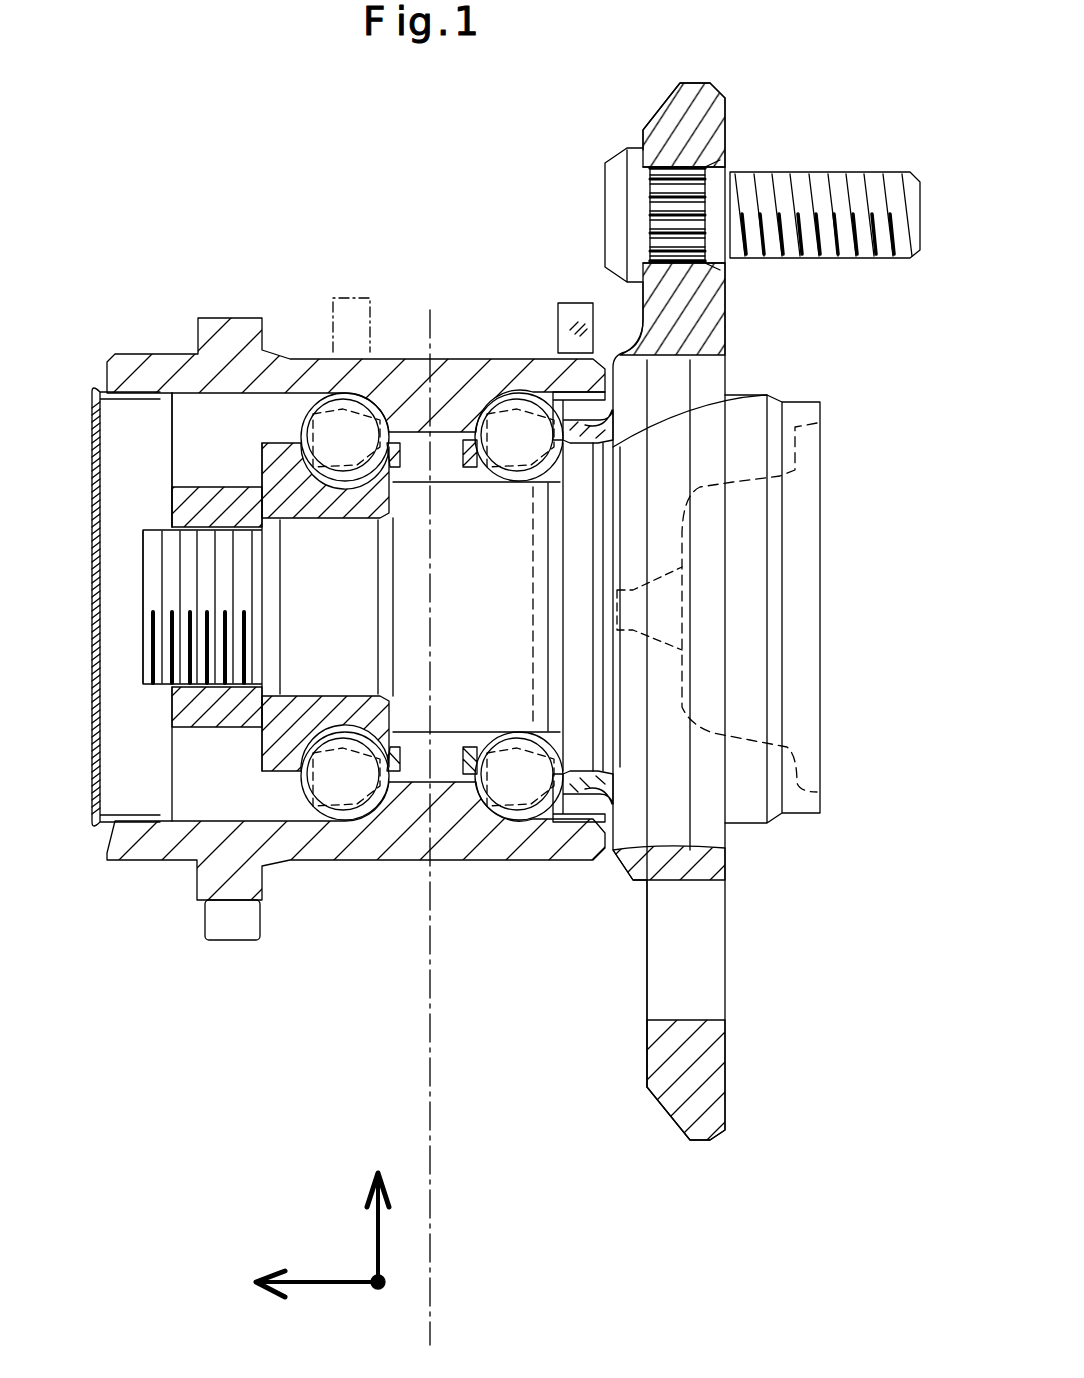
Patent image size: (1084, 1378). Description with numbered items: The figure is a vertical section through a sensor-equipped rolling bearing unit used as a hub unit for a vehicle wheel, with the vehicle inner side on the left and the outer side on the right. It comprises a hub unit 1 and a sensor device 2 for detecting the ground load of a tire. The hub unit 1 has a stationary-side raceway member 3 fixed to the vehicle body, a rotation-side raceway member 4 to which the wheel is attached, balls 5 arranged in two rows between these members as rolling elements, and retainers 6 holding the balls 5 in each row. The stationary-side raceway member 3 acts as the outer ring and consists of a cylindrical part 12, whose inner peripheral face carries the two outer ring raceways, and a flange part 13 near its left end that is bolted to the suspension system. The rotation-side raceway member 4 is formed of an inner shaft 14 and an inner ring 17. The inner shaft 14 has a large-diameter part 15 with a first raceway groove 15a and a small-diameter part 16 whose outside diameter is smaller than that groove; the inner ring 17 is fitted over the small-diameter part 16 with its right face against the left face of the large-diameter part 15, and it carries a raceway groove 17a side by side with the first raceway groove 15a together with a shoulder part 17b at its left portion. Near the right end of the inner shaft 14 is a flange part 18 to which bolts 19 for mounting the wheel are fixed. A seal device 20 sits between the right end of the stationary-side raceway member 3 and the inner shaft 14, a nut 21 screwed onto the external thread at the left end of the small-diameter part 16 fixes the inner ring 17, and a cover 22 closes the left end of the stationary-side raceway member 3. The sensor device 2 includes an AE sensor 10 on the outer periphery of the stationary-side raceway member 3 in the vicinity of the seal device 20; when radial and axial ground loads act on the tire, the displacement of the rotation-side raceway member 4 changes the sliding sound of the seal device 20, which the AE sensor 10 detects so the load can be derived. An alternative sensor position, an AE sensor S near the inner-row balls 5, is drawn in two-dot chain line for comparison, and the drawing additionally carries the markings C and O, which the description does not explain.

The hub unit 1 is at (505, 719).
The sensor device 2 is at (714, 611).
The stationary-side raceway member 3 is at (360, 602).
The rotation-side raceway member 4 is at (448, 478).
The balls 5 is at (338, 405).
The retainers 6 is at (408, 460).
The AE sensor 10 is at (578, 303).
The cylindrical part 12 is at (528, 838).
The flange part 13 is at (203, 906).
The inner shaft 14 is at (512, 588).
The large-diameter part 15 is at (508, 684).
The first raceway groove 15a is at (727, 395).
The small-diameter part 16 is at (308, 685).
The inner ring 17 is at (258, 593).
The raceway groove 17a is at (325, 443).
The shoulder part 17b is at (262, 765).
The flange part 18 is at (690, 126).
The bolts 19 is at (820, 190).
The seal device 20 is at (593, 827).
The nut 21 is at (172, 450).
The cover 22 is at (93, 800).
The AE sensor S is at (348, 298).
The wheel center line C is at (433, 1192).
The load acting point O is at (377, 1290).